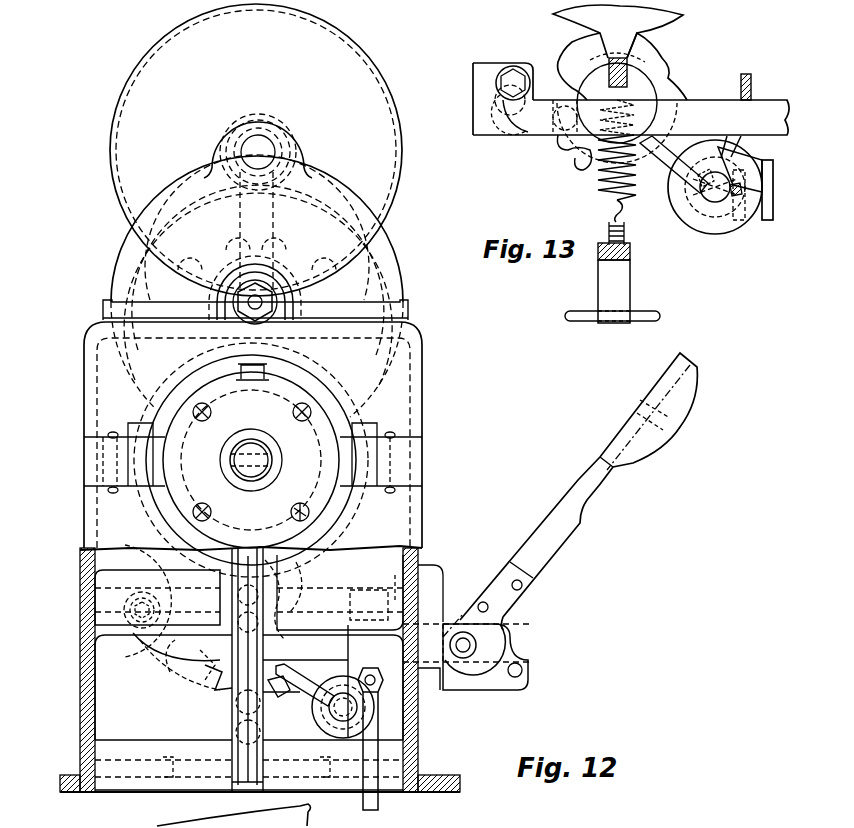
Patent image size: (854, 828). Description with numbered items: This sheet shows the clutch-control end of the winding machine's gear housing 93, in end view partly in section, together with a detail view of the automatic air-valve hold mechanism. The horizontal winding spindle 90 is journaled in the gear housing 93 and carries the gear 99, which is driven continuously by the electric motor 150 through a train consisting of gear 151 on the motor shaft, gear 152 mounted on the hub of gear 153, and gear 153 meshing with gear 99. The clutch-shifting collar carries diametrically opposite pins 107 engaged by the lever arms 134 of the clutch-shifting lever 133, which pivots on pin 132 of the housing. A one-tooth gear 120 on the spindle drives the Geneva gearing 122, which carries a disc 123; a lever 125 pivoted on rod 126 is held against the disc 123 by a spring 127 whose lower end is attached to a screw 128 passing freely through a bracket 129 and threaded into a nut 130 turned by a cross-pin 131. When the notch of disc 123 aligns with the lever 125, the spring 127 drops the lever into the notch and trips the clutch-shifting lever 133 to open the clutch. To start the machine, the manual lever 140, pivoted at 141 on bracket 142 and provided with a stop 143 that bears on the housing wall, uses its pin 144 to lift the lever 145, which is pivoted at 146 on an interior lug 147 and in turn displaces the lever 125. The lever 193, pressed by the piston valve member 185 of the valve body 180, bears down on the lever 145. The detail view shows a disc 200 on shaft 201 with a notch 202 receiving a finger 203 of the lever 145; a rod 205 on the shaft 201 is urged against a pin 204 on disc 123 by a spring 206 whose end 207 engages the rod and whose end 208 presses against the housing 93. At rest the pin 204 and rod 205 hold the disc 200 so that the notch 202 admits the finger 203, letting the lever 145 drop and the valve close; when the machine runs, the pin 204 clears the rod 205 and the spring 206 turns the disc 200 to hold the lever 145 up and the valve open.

In FIG. 12, the winding spindle 90 is at (273, 462).
In FIG. 12, the gear housing 93 is at (422, 526).
In FIG. 13, the gear housing 93 is at (774, 177).
In FIG. 12, the gear 99 is at (366, 364).
In FIG. 12, the outwardly-extending pins 107 is at (178, 461).
In FIG. 12, the one-tooth gear 120 is at (296, 577).
In FIG. 13, the one-tooth gear 120 is at (572, 26).
In FIG. 12, the Geneva gearing 122 is at (270, 692).
In FIG. 13, the Geneva gearing 122 is at (666, 56).
In FIG. 12, the disc 123 is at (203, 672).
In FIG. 13, the disc 123 is at (660, 72).
In FIG. 12, the lever 125 is at (186, 592).
In FIG. 13, the lever 125 is at (617, 56).
In FIG. 12, the rod 126 is at (136, 662).
In FIG. 13, the spring 127 is at (597, 184).
In FIG. 13, the screw 128 is at (625, 220).
In FIG. 13, the bracket 129 is at (632, 255).
In FIG. 13, the nut 130 is at (632, 287).
In FIG. 13, the cross-pin 131 is at (662, 316).
In FIG. 12, the pin 132 is at (200, 760).
In FIG. 12, the clutch-shifting lever 133 is at (264, 720).
In FIG. 12, the lever arms 134 is at (186, 444).
In FIG. 12, the lever 140 is at (650, 452).
In FIG. 12, the pivot 141 is at (468, 660).
In FIG. 12, the bracket 142 is at (458, 692).
In FIG. 12, the stop 143 is at (438, 697).
In FIG. 12, the pin 144 is at (522, 672).
In FIG. 12, the lever 145 is at (171, 672).
In FIG. 13, the lever 145 is at (506, 133).
In FIG. 12, the pivot 146 is at (118, 633).
In FIG. 13, the pivot 146 is at (500, 84).
In FIG. 12, the lug 147 is at (153, 579).
In FIG. 13, the lug 147 is at (485, 62).
In FIG. 12, the electric motor 150 is at (121, 97).
In FIG. 12, the gear 151 is at (284, 126).
In FIG. 12, the gear 152 is at (312, 166).
In FIG. 12, the gear 153 is at (284, 262).
In FIG. 12, the valve body 180 is at (348, 649).
In FIG. 12, the piston valve member 185 is at (419, 556).
In FIG. 12, the lever 193 is at (398, 576).
In FIG. 13, the lever 193 is at (752, 86).
In FIG. 12, the disc 200 is at (304, 737).
In FIG. 13, the disc 200 is at (723, 232).
In FIG. 13, the shaft 201 is at (708, 200).
In FIG. 13, the notch 202 is at (763, 162).
In FIG. 13, the finger 203 is at (735, 155).
In FIG. 12, the pin 204 is at (224, 690).
In FIG. 13, the pin 204 is at (556, 141).
In FIG. 12, the rod 205 is at (308, 684).
In FIG. 13, the rod 205 is at (660, 170).
In FIG. 13, the spring 206 is at (748, 230).
In FIG. 13, the spring end 207 is at (693, 200).
In FIG. 13, the spring end 208 is at (755, 220).